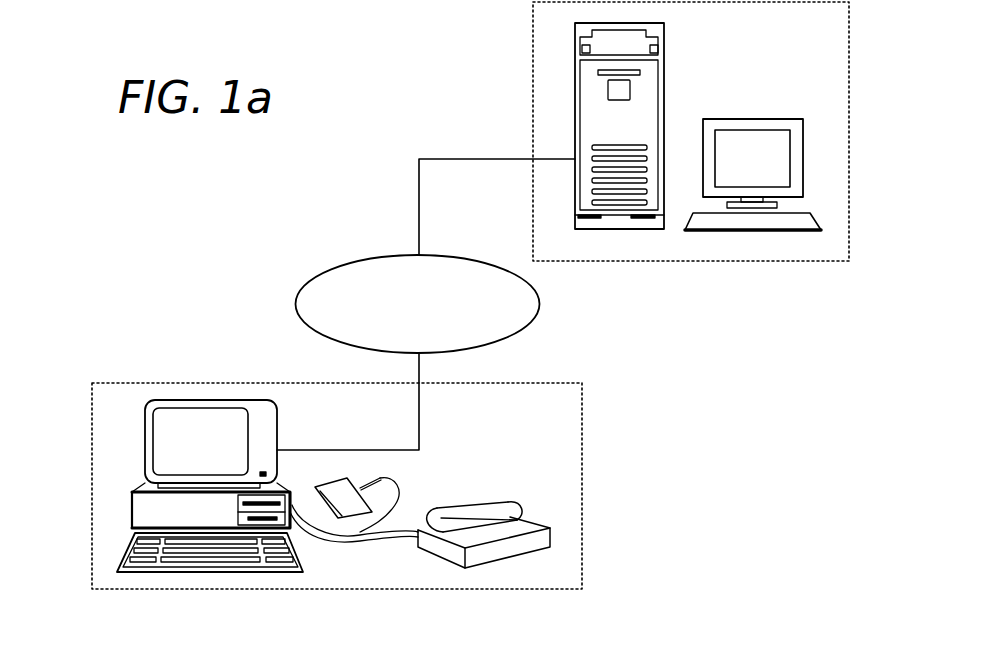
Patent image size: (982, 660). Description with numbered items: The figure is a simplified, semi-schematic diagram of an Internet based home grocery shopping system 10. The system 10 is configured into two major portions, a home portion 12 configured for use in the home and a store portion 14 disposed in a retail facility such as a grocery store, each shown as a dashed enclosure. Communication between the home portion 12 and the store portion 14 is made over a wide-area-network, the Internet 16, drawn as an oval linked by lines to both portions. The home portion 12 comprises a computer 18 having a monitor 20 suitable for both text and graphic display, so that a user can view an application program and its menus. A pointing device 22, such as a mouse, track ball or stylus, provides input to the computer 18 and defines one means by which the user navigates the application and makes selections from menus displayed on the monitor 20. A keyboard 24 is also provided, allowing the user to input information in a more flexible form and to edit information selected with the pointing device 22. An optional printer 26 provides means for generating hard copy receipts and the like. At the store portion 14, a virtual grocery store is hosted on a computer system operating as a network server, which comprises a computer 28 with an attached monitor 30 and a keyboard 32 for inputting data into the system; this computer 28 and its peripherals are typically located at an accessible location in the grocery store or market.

The Internet home shopping system 10 is at (208, 258).
The home portion 12 is at (152, 382).
The store portion 14 is at (806, 262).
The Internet 16 is at (527, 327).
The computer 18 is at (132, 510).
The monitor 20 is at (145, 440).
The pointing device 22 is at (343, 480).
The keyboard 24 is at (117, 562).
The printer 26 is at (488, 498).
The computer 28 is at (575, 73).
The monitor 30 is at (735, 122).
The keyboard 32 is at (810, 218).